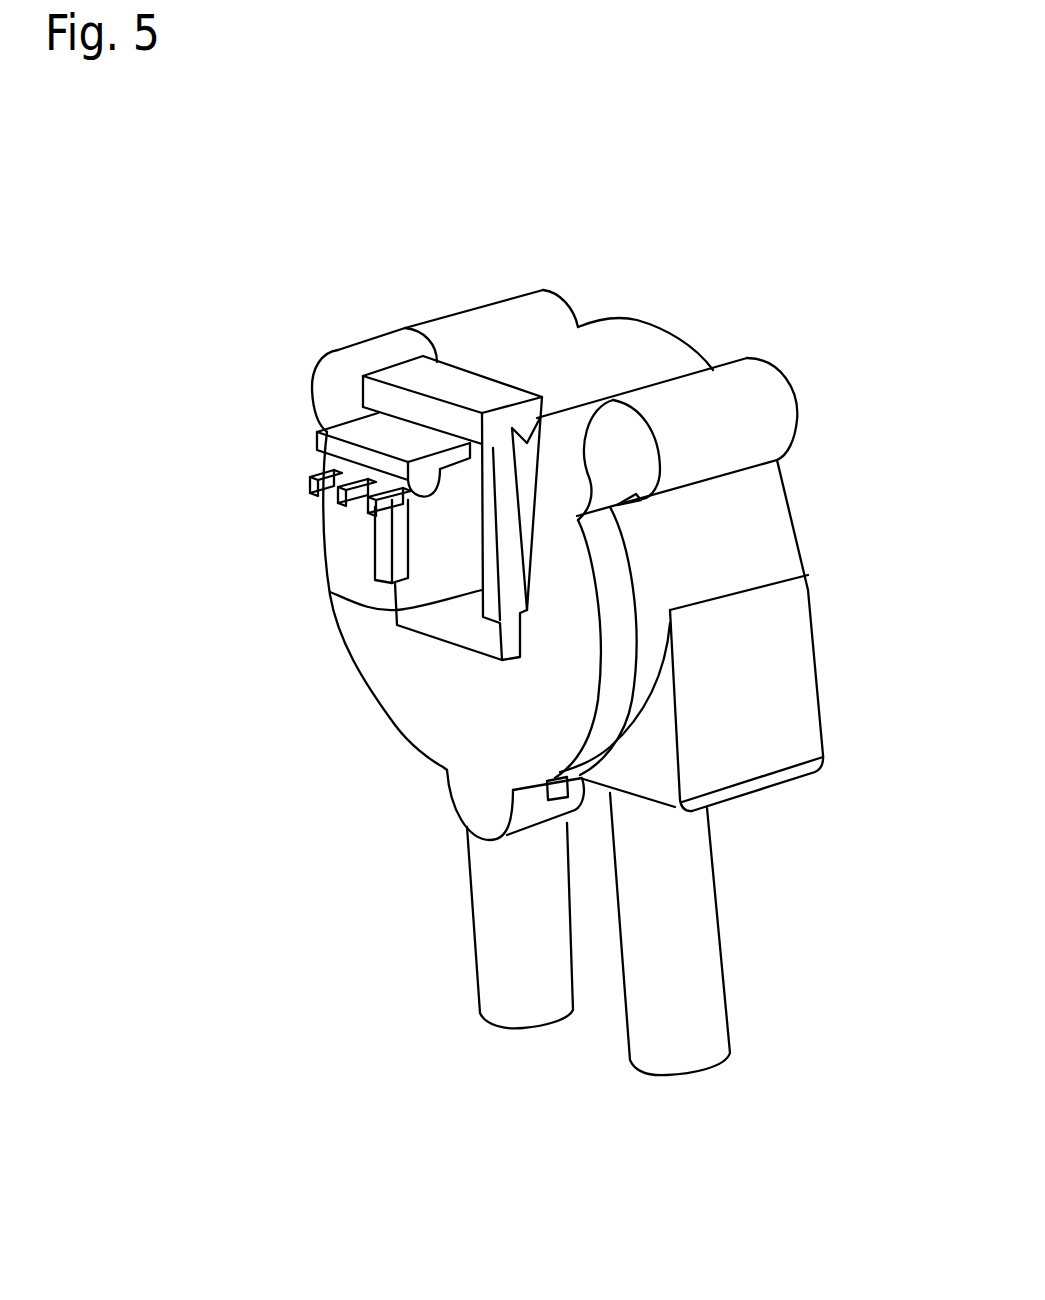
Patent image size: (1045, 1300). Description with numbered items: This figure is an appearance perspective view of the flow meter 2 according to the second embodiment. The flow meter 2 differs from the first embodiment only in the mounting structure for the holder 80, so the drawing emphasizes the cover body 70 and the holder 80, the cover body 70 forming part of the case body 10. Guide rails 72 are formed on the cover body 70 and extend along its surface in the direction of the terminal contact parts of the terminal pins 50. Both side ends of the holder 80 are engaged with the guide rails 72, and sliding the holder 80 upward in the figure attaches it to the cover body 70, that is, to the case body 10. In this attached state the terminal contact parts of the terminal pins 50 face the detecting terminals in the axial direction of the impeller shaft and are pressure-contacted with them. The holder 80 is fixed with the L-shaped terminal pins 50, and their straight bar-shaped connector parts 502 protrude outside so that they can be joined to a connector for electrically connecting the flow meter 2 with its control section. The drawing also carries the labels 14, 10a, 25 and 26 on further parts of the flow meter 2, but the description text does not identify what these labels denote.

The flow meter 2 is at (262, 173).
The case body 10 is at (446, 170).
The cover body 70 is at (357, 330).
The second connector housing part 14 is at (489, 296).
The main housing 10a is at (792, 495).
The terminal pin 50 is at (340, 517).
The connector part 502 is at (308, 500).
The guide rails 72 is at (375, 567).
The holder 80 is at (402, 637).
The first tubular portion 25 is at (527, 1044).
The second tubular portion 26 is at (685, 1086).